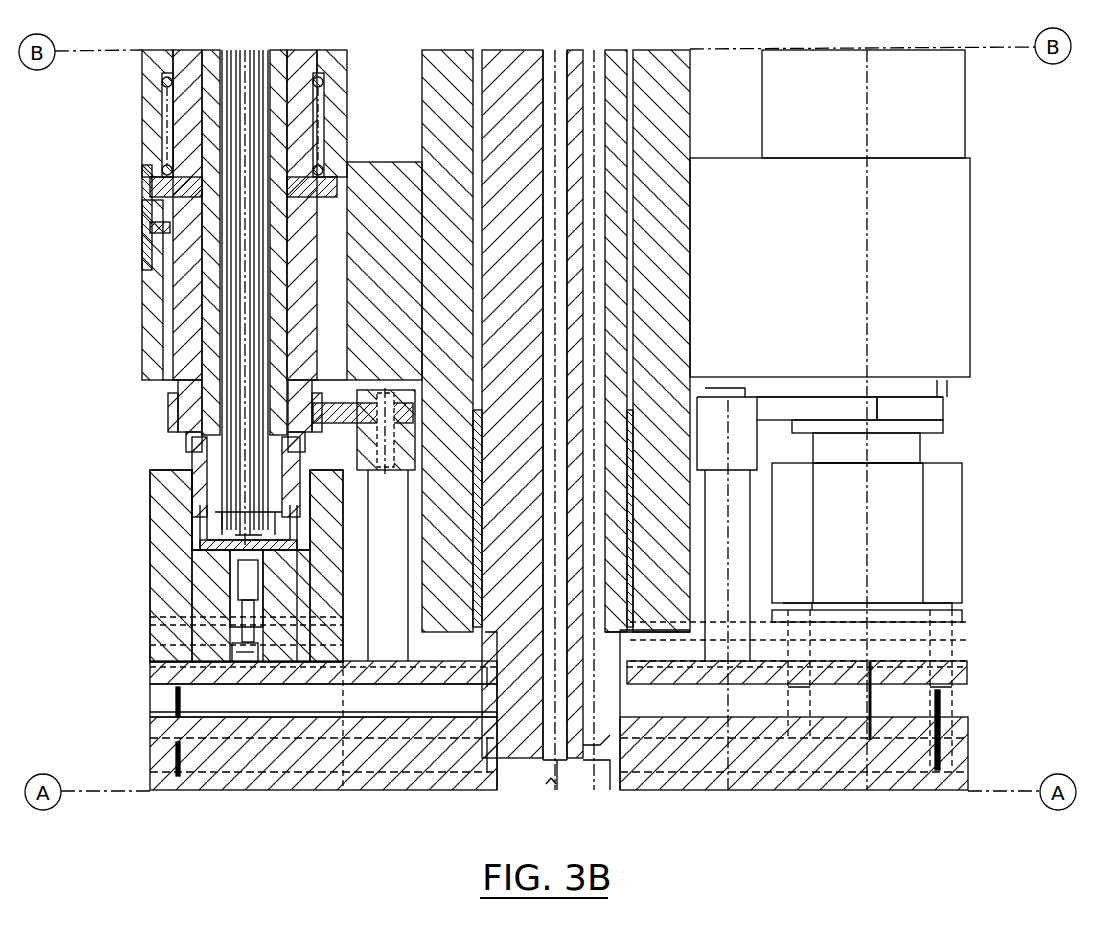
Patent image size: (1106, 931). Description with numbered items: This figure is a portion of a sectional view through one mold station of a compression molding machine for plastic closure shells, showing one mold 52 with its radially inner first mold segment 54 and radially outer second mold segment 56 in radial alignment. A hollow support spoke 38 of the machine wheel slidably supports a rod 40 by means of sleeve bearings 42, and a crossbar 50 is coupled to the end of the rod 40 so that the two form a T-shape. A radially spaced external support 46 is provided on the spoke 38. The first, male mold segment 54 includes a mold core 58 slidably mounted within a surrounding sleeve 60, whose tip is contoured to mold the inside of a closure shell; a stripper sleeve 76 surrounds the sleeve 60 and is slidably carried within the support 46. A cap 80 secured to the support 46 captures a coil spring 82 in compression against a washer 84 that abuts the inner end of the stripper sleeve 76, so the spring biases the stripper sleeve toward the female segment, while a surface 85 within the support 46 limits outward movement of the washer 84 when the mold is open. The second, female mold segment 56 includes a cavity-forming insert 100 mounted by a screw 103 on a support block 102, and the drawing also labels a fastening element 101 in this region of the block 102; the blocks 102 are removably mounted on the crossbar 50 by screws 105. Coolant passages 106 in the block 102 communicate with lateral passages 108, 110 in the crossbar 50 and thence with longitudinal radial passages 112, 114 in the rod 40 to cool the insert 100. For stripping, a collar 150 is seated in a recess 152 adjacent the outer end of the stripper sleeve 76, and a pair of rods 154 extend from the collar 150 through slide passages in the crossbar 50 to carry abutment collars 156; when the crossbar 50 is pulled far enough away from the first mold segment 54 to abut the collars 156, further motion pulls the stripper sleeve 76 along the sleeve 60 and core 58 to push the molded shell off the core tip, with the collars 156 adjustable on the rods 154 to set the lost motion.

The support spoke 38 is at (682, 125).
The rod 40 is at (640, 218).
The sleeve bearings 42 is at (620, 420).
The external support 46 is at (150, 322).
The crossbar 50 is at (320, 785).
The mold 52 is at (130, 498).
The first mold segment 54 is at (182, 448).
The second mold segment 56 is at (148, 520).
The mold core 58 is at (180, 433).
The sleeve 60 is at (208, 258).
The stripper sleeve 76 is at (188, 290).
The cap 80 is at (162, 125).
The coil spring 82 is at (175, 180).
The washer 84 is at (150, 190).
The surface 85 is at (160, 228).
The cavity-forming insert 100 is at (235, 548).
The bolt 101 is at (238, 600).
The support block 102 is at (165, 585).
The screw 103 is at (238, 655).
The screws 105 is at (945, 608).
The coolant passages 106 is at (300, 683).
The lateral passage 108 is at (215, 713).
The lateral passage 110 is at (260, 775).
The longitudinal radial passage 112 is at (595, 725).
The longitudinal radial passage 114 is at (550, 750).
The collar 150 is at (810, 410).
The recess 152 is at (180, 408).
The rods 154 is at (400, 650).
The abutment collars 156 is at (760, 400).